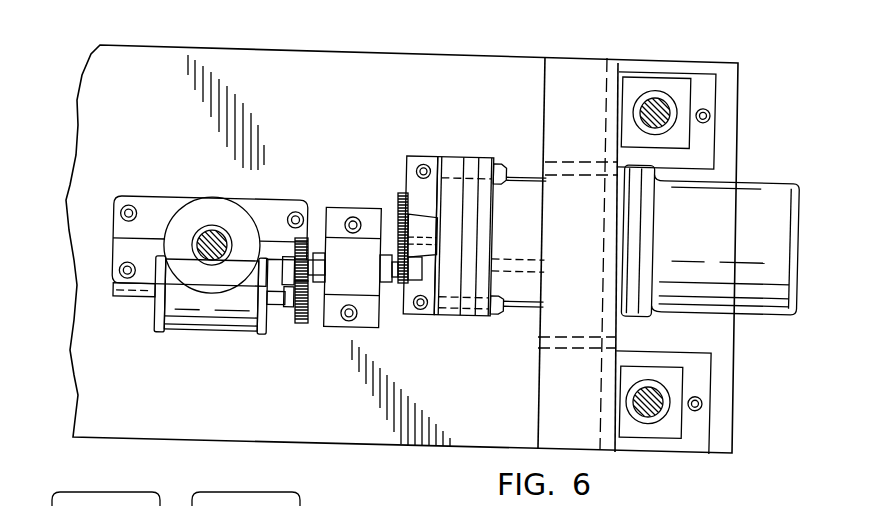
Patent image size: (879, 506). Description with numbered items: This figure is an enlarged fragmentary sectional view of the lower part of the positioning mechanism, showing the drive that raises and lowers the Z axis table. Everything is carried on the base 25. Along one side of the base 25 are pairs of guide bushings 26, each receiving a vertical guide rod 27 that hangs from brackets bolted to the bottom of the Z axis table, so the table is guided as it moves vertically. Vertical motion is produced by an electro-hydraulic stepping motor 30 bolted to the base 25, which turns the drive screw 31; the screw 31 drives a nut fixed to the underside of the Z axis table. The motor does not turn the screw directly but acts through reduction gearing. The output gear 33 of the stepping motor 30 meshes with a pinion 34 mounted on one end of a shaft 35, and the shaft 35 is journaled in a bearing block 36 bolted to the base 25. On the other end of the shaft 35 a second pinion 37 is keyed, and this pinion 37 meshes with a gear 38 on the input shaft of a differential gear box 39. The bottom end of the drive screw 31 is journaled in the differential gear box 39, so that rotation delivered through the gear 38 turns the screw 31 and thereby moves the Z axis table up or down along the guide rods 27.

The base 25 is at (337, 67).
The guide bushings 26 is at (670, 118).
The vertical guide rods 27 is at (660, 103).
The electro-hydraulic stepping motor 30 is at (513, 270).
The drive screw 31 is at (204, 230).
The output gear 33 is at (400, 200).
The pinion 34 is at (403, 290).
The shaft 35 is at (393, 283).
The bearing block 36 is at (355, 255).
The pinion 37 is at (300, 237).
The gear 38 is at (303, 325).
The differential gear box 39 is at (195, 320).